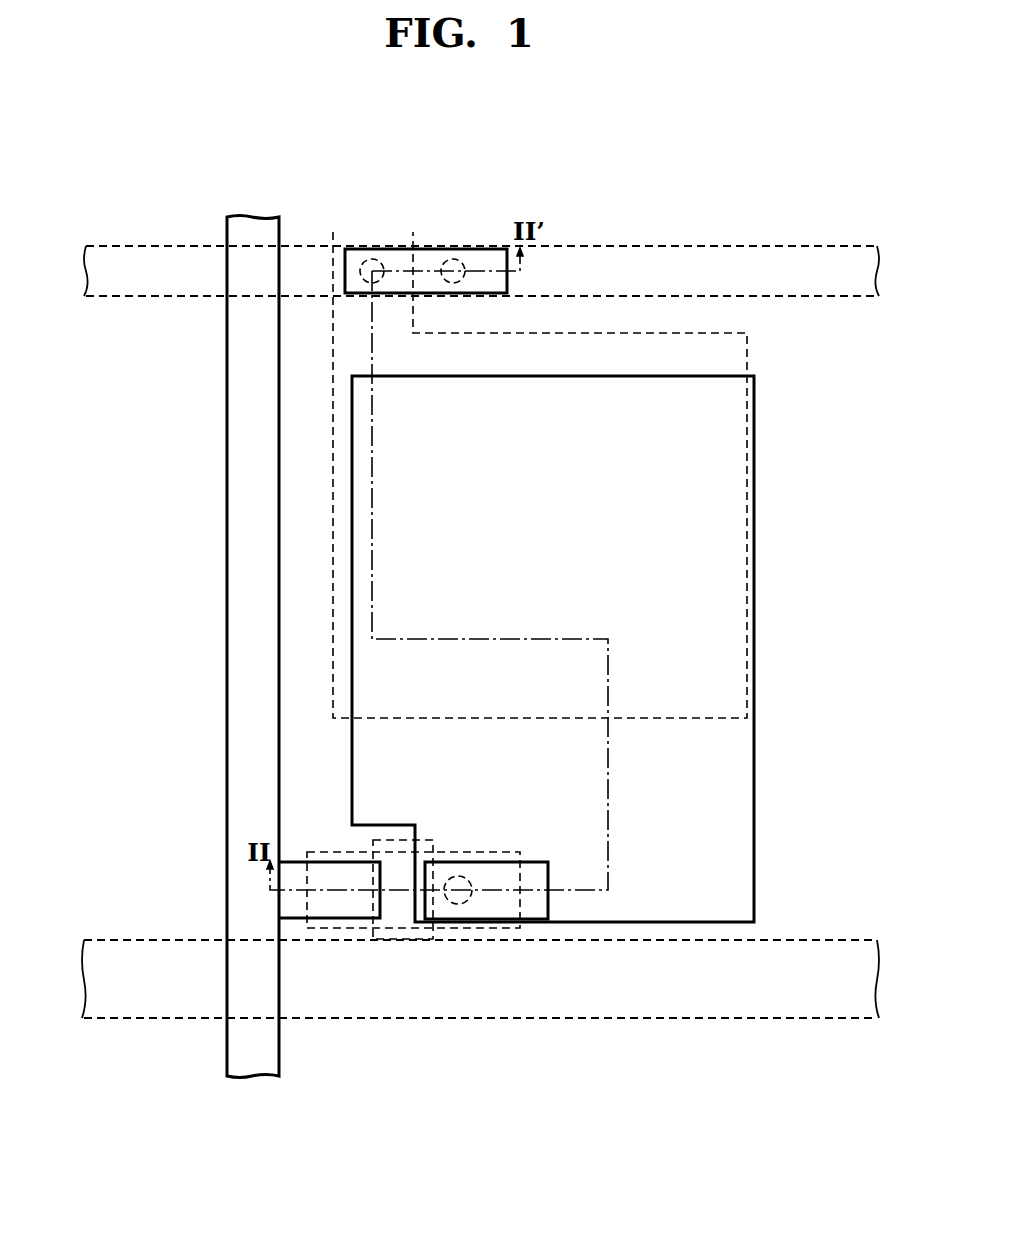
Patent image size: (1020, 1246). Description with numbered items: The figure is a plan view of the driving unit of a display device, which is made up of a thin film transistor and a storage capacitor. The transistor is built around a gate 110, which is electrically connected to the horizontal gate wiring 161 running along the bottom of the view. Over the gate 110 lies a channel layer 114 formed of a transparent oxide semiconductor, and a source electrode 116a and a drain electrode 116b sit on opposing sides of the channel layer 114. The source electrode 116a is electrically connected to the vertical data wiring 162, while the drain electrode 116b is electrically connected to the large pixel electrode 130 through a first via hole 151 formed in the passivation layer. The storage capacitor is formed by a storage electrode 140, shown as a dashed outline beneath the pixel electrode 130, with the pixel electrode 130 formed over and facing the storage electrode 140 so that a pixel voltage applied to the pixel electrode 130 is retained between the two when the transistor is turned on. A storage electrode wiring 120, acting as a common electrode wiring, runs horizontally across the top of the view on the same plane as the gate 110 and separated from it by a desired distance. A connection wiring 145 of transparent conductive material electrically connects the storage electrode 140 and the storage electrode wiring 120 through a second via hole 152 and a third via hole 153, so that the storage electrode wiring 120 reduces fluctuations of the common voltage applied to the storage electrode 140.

The gate 110 is at (428, 838).
The channel layer 114 is at (487, 852).
The source electrode 116a is at (333, 918).
The drain electrode 116b is at (538, 919).
The storage electrode wiring 120 is at (703, 246).
The pixel electrode 130 is at (747, 792).
The storage electrode 140 is at (740, 353).
The connection wiring 145 is at (485, 293).
The first via hole 151 is at (457, 904).
The second via hole 152 is at (372, 259).
The third via hole 153 is at (453, 259).
The gate wiring 161 is at (747, 1018).
The data wiring 162 is at (233, 775).